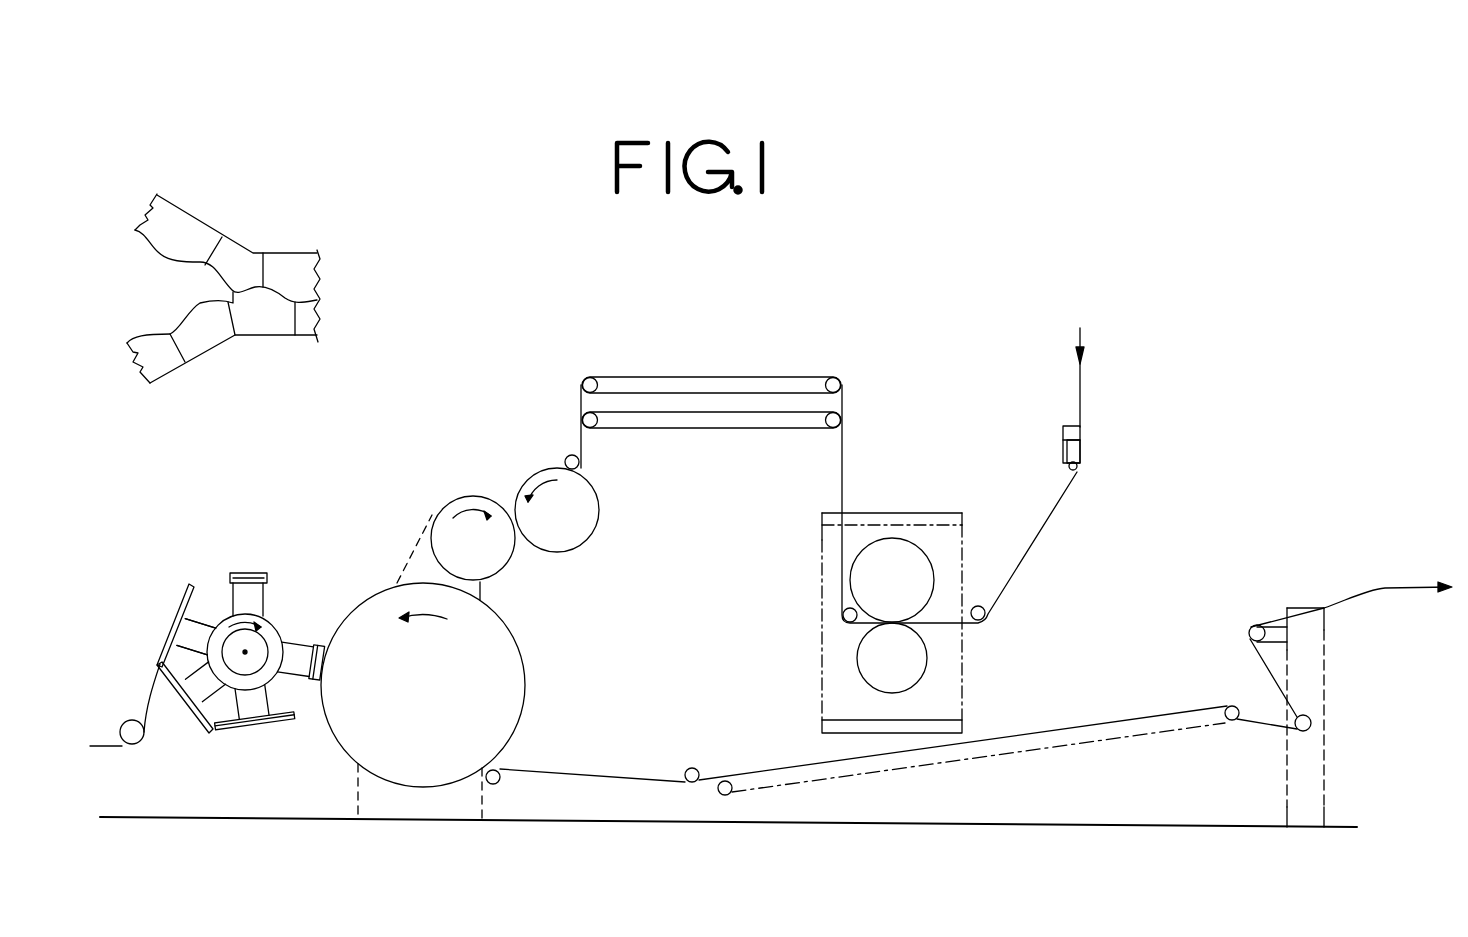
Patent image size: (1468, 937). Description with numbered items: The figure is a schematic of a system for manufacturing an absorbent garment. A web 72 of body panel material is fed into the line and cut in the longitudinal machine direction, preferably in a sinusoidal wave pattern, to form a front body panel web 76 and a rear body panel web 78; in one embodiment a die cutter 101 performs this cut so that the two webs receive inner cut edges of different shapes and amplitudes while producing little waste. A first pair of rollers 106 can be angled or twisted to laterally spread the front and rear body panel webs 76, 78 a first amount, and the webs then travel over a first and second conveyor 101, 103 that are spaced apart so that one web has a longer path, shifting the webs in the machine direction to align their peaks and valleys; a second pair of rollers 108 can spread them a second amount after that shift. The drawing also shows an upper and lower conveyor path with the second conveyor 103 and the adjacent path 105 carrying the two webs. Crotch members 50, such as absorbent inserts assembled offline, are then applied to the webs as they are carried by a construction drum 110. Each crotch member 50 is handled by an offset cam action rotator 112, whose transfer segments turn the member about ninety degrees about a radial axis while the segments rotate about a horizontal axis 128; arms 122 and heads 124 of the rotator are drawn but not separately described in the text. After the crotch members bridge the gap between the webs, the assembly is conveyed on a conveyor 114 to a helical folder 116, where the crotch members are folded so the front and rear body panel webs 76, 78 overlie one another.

The crotch member 50 is at (168, 637).
The web of body panel material 72 is at (1047, 520).
The front body panel web 76 is at (183, 227).
The rear body panel web 78 is at (212, 335).
The die cutter 101 is at (963, 665).
The second conveyor 103 is at (723, 388).
The lower conveyor 105 is at (703, 432).
The first pair of rollers 106 is at (843, 613).
The second pair of rollers 108 is at (565, 458).
The construction drum 110 is at (525, 658).
The offset cam action rotator 112 is at (273, 622).
The conveyor 114 is at (1053, 747).
The helical folder 116 is at (1325, 628).
The hub arm 122 is at (195, 628).
The arm head 124 is at (233, 572).
The horizontal axis 128 is at (243, 655).